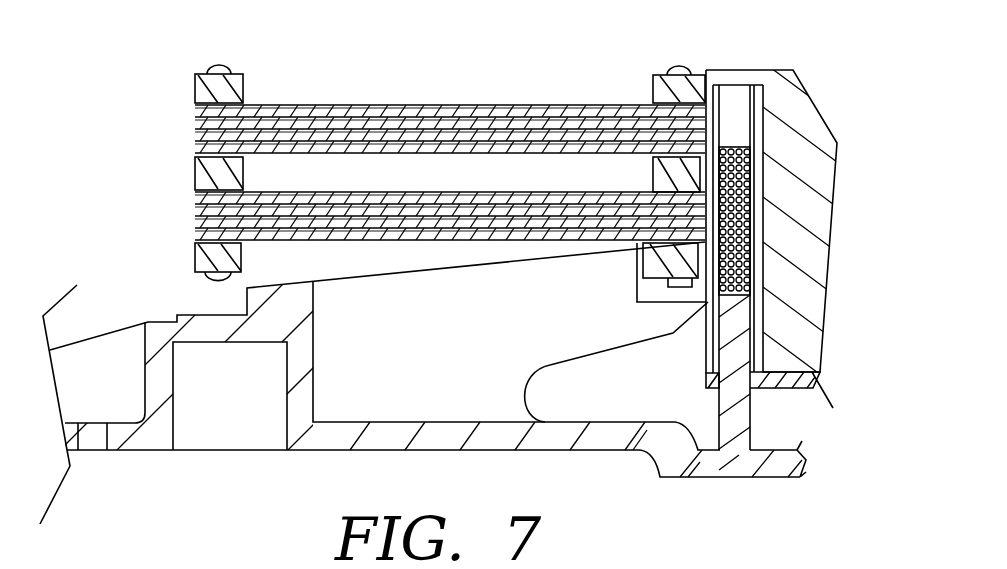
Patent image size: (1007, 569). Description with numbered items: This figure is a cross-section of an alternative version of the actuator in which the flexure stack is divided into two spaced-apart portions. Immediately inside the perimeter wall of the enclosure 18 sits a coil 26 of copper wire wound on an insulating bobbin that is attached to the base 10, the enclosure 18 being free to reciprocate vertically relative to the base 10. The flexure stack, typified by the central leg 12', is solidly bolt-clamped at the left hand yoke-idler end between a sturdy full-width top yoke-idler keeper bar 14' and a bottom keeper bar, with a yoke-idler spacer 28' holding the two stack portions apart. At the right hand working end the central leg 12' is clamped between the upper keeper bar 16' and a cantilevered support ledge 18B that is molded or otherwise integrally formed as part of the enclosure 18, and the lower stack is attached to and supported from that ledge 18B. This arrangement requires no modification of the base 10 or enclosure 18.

The base 10 is at (453, 375).
The central leg 12' is at (450, 105).
The top yoke-idler keeper bar 14' is at (166, 80).
The upper keeper bar 16' is at (626, 73).
The enclosure 18 is at (755, 78).
The cantilevered support ledge 18B is at (673, 265).
The coil 26 is at (742, 147).
The yoke-idler spacer 28' is at (165, 171).